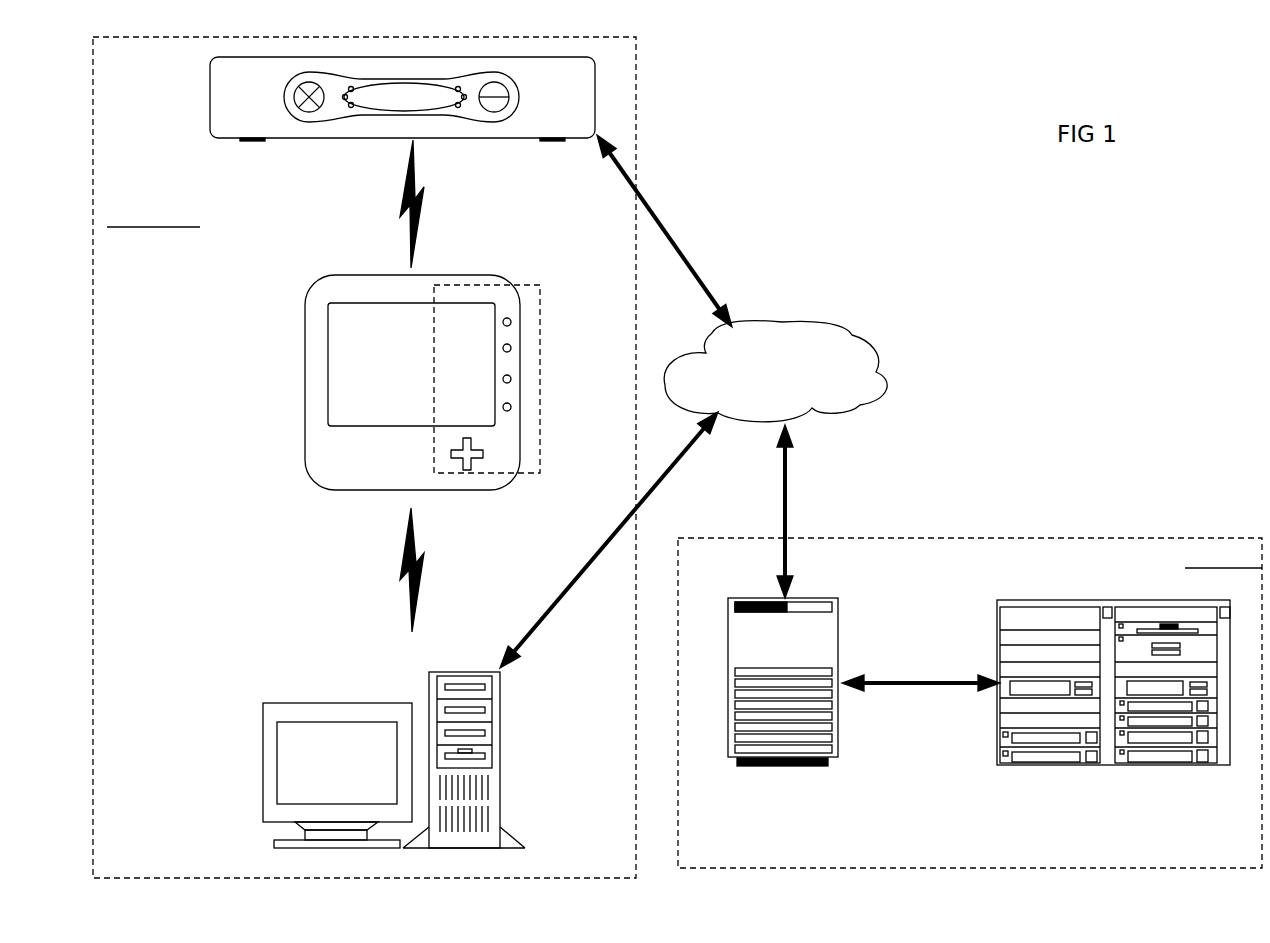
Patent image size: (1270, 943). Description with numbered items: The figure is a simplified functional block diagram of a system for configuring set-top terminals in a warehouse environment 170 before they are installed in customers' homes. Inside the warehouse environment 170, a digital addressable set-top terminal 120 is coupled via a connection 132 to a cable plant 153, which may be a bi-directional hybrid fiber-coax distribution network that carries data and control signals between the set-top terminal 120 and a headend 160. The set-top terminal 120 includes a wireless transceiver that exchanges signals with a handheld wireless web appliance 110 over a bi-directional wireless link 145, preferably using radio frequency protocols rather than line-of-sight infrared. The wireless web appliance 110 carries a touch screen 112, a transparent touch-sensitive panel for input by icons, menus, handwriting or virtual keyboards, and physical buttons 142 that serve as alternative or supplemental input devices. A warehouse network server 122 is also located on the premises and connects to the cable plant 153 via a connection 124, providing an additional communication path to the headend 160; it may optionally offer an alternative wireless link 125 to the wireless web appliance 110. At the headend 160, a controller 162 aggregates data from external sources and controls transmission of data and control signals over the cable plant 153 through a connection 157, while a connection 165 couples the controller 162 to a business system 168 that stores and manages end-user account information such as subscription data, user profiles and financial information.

The warehouse environment 170 is at (636, 112).
The set-top terminal 120 is at (363, 140).
The bi-directional wireless link 145 is at (402, 198).
The wireless web appliance 110 is at (314, 421).
The touch screen 112 is at (337, 338).
The physical buttons 142 is at (543, 358).
The alternative wireless link 125 is at (405, 548).
The warehouse network server 122 is at (520, 846).
The connection 132 is at (692, 265).
The cable plant 153 is at (832, 327).
The connection 124 is at (582, 568).
The connection 157 is at (788, 497).
The headend 160 is at (975, 538).
The controller 162 is at (780, 767).
The connection 165 is at (943, 683).
The business system 168 is at (1050, 765).